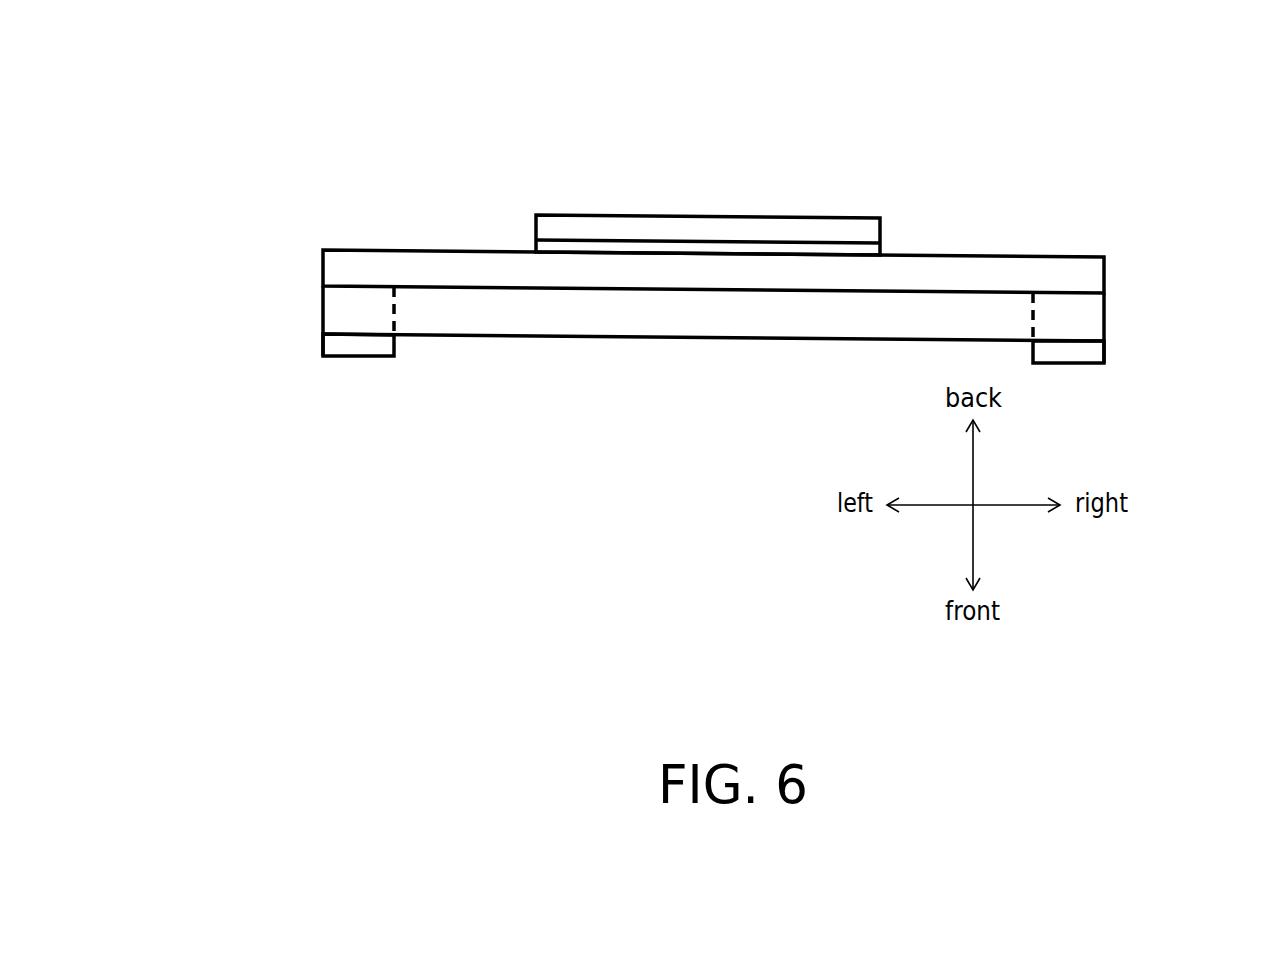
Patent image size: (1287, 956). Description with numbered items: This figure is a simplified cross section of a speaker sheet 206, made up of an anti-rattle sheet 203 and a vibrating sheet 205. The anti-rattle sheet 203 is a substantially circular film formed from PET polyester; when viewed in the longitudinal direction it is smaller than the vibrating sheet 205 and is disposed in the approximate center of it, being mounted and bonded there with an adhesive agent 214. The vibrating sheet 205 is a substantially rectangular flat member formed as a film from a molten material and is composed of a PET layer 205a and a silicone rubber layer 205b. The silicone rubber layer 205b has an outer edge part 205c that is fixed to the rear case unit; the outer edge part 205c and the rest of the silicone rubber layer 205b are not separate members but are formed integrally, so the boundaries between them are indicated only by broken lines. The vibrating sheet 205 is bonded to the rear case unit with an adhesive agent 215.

The speaker sheet 206 is at (553, 168).
The anti-rattle sheet 203 is at (775, 233).
The adhesive agent 214 is at (857, 248).
The vibrating sheet 205 is at (1058, 237).
The PET layer 205a is at (395, 263).
The silicone rubber layer 205b is at (618, 312).
The outer edge part 205c is at (360, 308).
The adhesive agent 215 is at (347, 344).